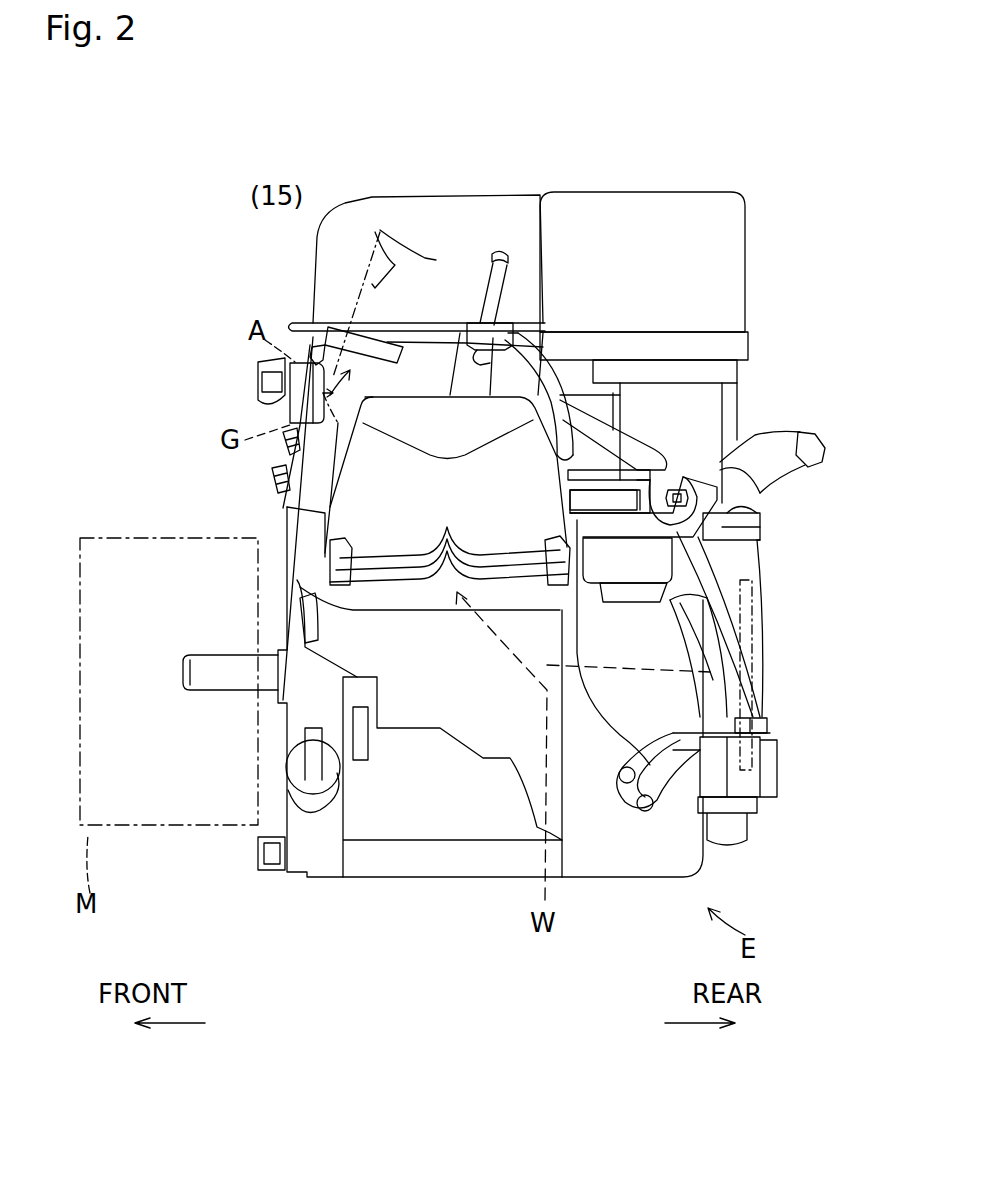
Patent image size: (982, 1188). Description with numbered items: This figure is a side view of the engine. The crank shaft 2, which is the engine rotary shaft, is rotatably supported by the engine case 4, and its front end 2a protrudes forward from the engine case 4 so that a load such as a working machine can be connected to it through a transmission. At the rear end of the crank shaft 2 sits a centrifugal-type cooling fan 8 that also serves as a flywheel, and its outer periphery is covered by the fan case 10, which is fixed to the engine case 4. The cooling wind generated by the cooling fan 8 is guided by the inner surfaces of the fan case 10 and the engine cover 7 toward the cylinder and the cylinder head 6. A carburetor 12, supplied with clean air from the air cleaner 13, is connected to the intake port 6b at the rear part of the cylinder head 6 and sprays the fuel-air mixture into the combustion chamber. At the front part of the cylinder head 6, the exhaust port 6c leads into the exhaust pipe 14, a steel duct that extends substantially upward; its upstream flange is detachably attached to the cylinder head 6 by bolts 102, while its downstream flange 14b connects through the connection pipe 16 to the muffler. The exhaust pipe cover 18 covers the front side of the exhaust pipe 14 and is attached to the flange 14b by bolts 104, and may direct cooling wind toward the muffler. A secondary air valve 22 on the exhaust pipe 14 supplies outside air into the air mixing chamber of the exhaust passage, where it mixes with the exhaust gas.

The crank shaft 2 is at (243, 698).
The front end of the crank shaft 2a is at (197, 700).
The engine case 4 is at (405, 812).
The cylinder head 6 is at (393, 460).
The intake port 6b is at (572, 472).
The exhaust port 6c is at (390, 357).
The engine cover 7 is at (495, 745).
The cooling fan 8 is at (757, 622).
The fan case 10 is at (745, 552).
The carburetor 12 is at (643, 566).
The air cleaner 13 is at (718, 212).
The exhaust pipe 14 is at (340, 326).
The downstream side flange 14b is at (365, 433).
The connection pipe 16 is at (333, 303).
The exhaust pipe cover 18 is at (262, 372).
The secondary air valve 22 is at (300, 408).
The bolts 102 is at (270, 483).
The bolts 104 is at (283, 445).